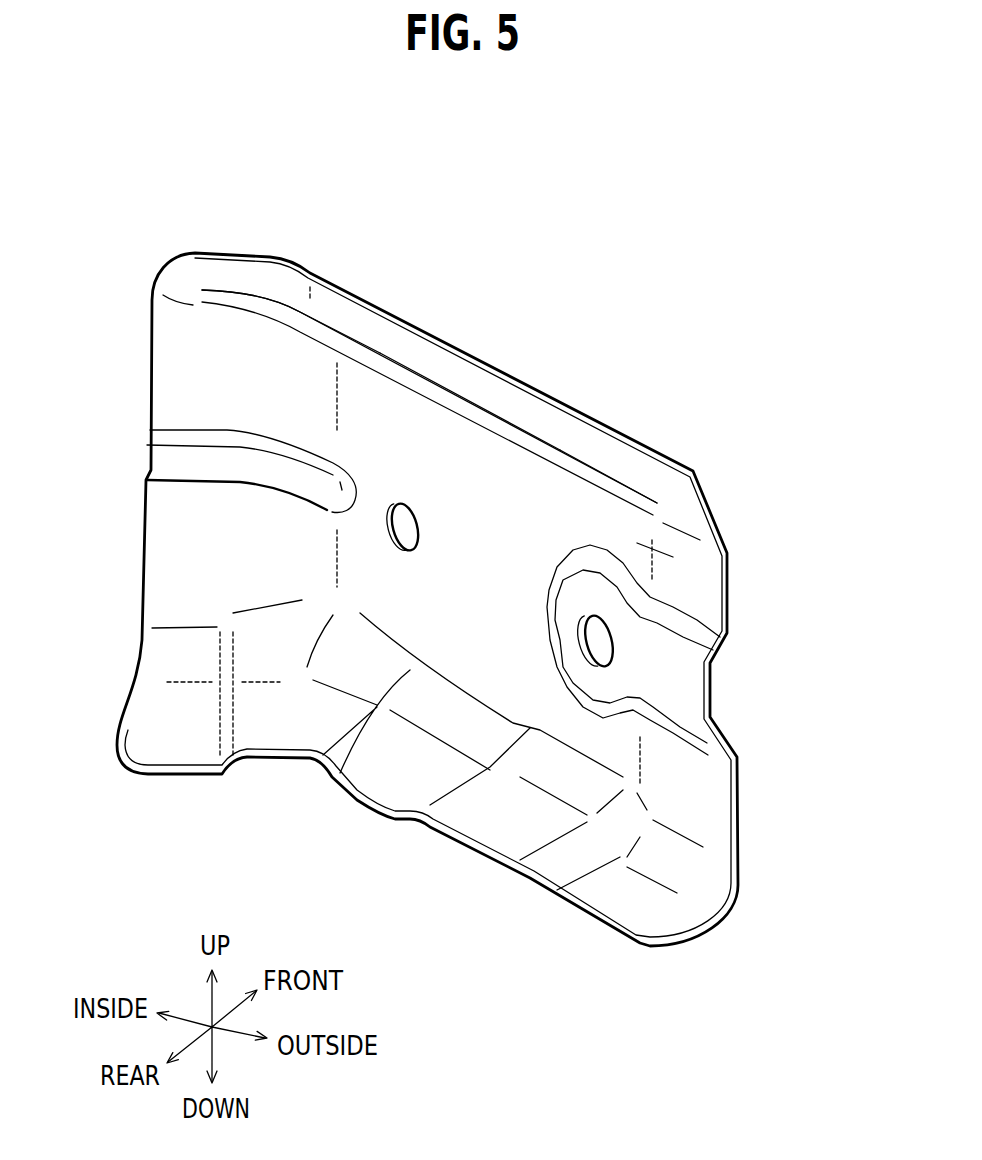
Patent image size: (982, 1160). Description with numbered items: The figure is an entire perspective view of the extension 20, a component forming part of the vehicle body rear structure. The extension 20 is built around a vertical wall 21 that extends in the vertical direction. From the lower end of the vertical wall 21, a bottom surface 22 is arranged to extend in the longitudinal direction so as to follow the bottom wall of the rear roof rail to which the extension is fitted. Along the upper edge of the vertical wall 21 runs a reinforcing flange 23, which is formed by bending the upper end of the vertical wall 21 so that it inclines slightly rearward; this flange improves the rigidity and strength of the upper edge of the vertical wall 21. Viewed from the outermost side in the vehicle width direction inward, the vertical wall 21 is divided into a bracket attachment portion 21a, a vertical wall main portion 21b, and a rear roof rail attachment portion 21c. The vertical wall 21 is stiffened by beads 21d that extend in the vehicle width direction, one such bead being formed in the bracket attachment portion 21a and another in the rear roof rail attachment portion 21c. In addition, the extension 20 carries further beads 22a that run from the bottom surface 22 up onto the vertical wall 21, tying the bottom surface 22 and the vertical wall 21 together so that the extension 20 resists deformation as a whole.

The extension 20 is at (650, 417).
The vertical wall 21 is at (613, 192).
The bracket attachment portion 21a is at (673, 557).
The vertical wall main portion 21b is at (473, 457).
The rear roof rail attachment portion 21c is at (267, 360).
The beads 21d is at (182, 467).
The bottom surface 22 is at (168, 742).
The beads 22a is at (297, 725).
The reinforcing flange 23 is at (220, 252).